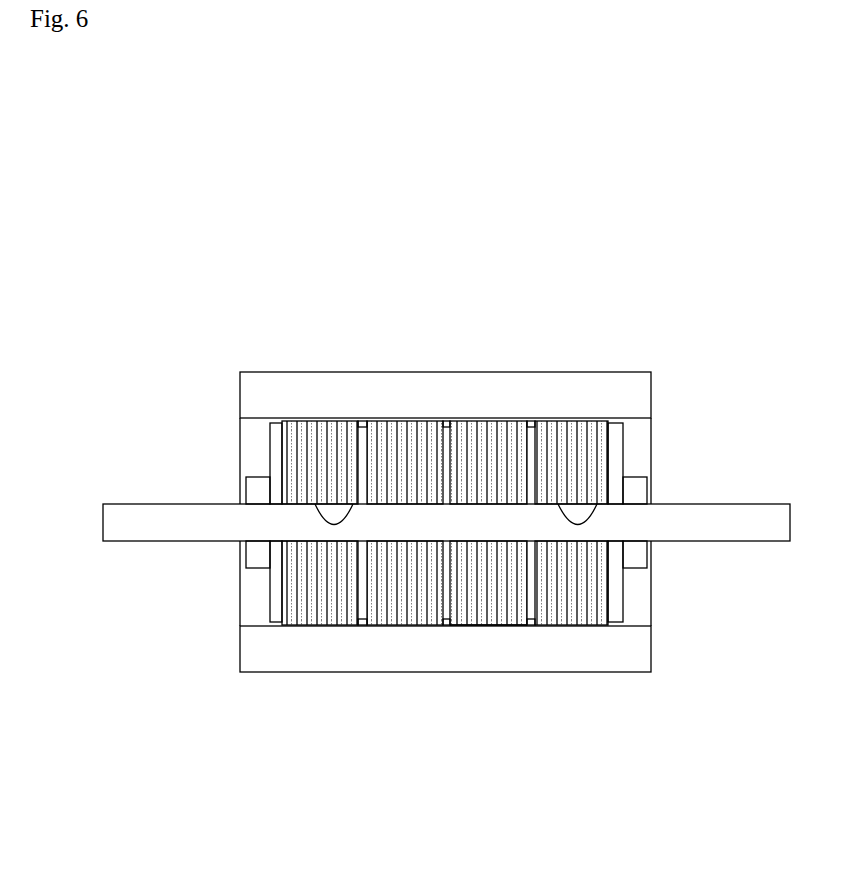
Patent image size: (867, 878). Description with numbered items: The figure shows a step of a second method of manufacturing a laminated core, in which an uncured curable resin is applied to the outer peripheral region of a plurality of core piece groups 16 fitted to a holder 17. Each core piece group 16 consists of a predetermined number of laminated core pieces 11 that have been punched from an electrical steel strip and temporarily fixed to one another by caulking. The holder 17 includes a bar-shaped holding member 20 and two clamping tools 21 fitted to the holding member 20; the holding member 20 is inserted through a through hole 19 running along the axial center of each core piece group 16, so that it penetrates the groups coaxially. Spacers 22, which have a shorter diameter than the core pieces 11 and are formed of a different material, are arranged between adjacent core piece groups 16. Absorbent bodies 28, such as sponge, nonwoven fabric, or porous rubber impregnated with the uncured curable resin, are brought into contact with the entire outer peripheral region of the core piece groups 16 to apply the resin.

The core piece 11 is at (381, 621).
The core piece group 16 is at (558, 636).
The holder 17 is at (208, 553).
The through hole 19 is at (340, 521).
The holding member 20 is at (222, 519).
The clamping tool 21 is at (258, 478).
The spacer 22 is at (447, 424).
The absorbent body 28 is at (382, 368).